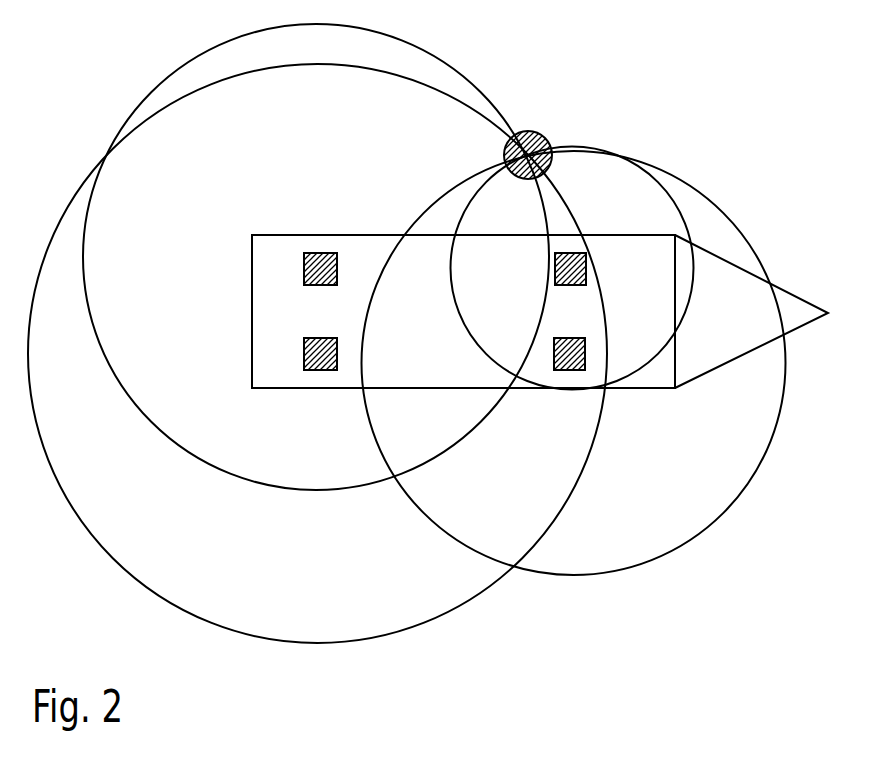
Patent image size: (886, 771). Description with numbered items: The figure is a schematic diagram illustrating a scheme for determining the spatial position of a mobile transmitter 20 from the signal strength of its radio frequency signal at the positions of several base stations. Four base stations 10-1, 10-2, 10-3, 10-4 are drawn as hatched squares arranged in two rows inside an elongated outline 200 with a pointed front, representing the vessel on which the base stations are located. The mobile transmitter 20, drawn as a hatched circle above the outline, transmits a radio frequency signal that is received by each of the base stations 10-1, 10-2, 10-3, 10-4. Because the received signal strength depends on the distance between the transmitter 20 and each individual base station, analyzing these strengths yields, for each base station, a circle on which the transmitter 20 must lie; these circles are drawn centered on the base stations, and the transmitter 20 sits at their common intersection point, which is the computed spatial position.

The vehicle 200 is at (420, 388).
The base station 10-1 is at (320, 253).
The base station 10-2 is at (320, 370).
The base station 10-3 is at (568, 252).
The base station 10-4 is at (560, 370).
The mobile transmitter 20 is at (527, 131).